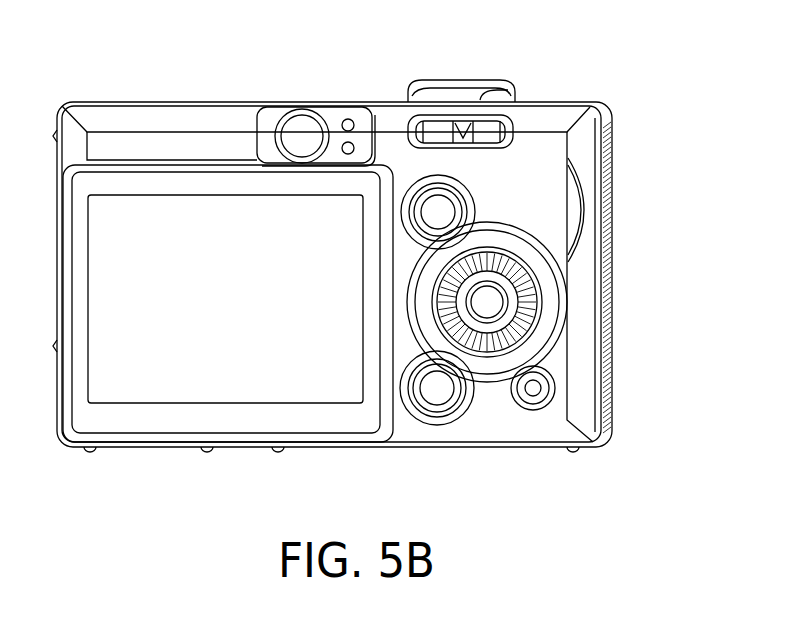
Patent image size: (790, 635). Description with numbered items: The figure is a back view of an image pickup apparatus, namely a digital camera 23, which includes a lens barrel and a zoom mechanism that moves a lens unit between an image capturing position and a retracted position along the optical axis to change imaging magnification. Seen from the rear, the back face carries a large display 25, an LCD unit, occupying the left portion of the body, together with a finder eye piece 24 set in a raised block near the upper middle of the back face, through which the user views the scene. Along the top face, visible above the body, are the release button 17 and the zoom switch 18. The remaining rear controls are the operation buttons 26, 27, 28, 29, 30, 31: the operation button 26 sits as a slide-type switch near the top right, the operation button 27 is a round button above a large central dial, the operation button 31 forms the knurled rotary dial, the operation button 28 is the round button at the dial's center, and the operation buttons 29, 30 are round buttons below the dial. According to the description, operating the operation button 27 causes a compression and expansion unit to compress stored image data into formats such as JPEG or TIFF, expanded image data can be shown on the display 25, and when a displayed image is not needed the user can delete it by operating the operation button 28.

The release button 17 is at (458, 80).
The zoom switch 18 is at (497, 93).
The digital camera 23 is at (158, 113).
The finder eye piece 24 is at (297, 115).
The display 25 is at (288, 390).
The operation button 26 is at (490, 120).
The operation button 27 is at (443, 205).
The operation button 28 is at (487, 302).
The operation button 29 is at (437, 390).
The operation button 30 is at (533, 390).
The operation button 31 is at (525, 320).